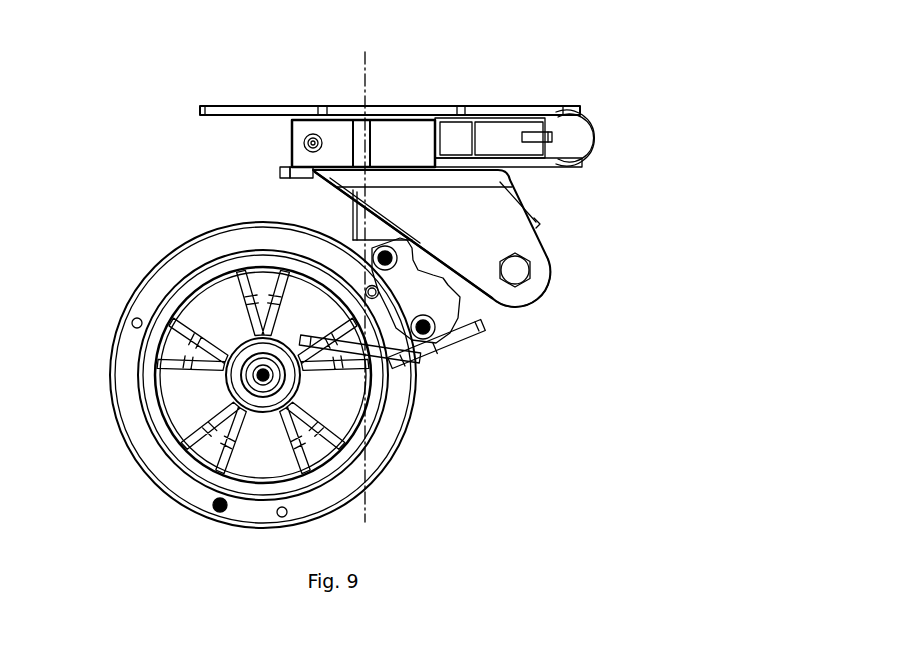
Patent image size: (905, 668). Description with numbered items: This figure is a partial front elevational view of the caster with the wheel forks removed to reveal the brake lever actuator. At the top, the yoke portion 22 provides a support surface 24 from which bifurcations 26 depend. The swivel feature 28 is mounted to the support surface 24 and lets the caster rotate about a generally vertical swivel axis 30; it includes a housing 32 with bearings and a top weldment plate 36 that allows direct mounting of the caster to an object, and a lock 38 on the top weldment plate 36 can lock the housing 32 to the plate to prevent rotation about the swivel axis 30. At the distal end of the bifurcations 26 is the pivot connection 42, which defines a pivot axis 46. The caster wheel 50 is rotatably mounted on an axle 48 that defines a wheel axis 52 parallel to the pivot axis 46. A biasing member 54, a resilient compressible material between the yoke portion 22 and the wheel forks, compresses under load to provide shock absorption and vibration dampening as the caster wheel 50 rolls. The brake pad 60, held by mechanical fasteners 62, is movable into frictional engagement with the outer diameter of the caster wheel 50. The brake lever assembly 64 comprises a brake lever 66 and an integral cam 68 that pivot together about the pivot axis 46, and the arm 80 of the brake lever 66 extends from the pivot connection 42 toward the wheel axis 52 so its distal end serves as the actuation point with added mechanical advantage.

The yoke portion 22 is at (538, 222).
The support surface 24 is at (278, 173).
The bifurcations 26 is at (496, 207).
The swivel feature 28 is at (262, 140).
The swivel axis 30 is at (365, 284).
The housing 32 is at (292, 148).
The top weldment plate 36 is at (217, 112).
The lock 38 is at (600, 135).
The pivot connection 42 is at (525, 263).
The pivot axis 46 is at (524, 286).
The axle 48 is at (155, 312).
The caster wheel 50 is at (115, 340).
The wheel axis 52 is at (240, 380).
The biasing member 54 is at (353, 214).
The brake pad 60 is at (462, 332).
The mechanical fasteners 62 is at (420, 382).
The brake lever assembly 64 is at (513, 321).
The brake lever 66 is at (452, 342).
The cam 68 is at (457, 300).
The arm 80 is at (273, 287).